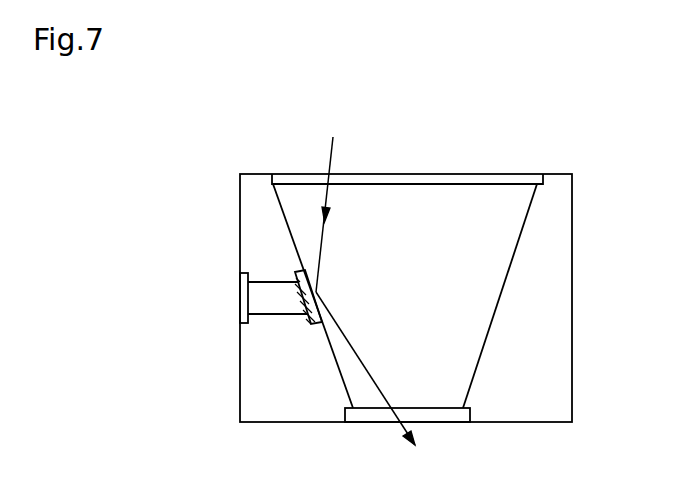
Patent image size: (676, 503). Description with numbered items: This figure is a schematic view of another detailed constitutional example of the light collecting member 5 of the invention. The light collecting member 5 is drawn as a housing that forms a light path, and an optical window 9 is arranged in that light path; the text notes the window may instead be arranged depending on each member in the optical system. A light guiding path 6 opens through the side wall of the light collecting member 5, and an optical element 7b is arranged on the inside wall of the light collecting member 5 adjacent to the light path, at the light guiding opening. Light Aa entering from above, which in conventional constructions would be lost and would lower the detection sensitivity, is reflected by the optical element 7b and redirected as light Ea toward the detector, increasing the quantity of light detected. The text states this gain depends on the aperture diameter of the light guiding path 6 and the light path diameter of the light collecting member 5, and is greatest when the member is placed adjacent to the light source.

The light collecting member 5 is at (573, 268).
The optical window 9 is at (487, 177).
The light guiding path 6 is at (267, 284).
The optical element 7b is at (308, 322).
The light Aa is at (356, 203).
The emitted light ray Ea is at (365, 368).